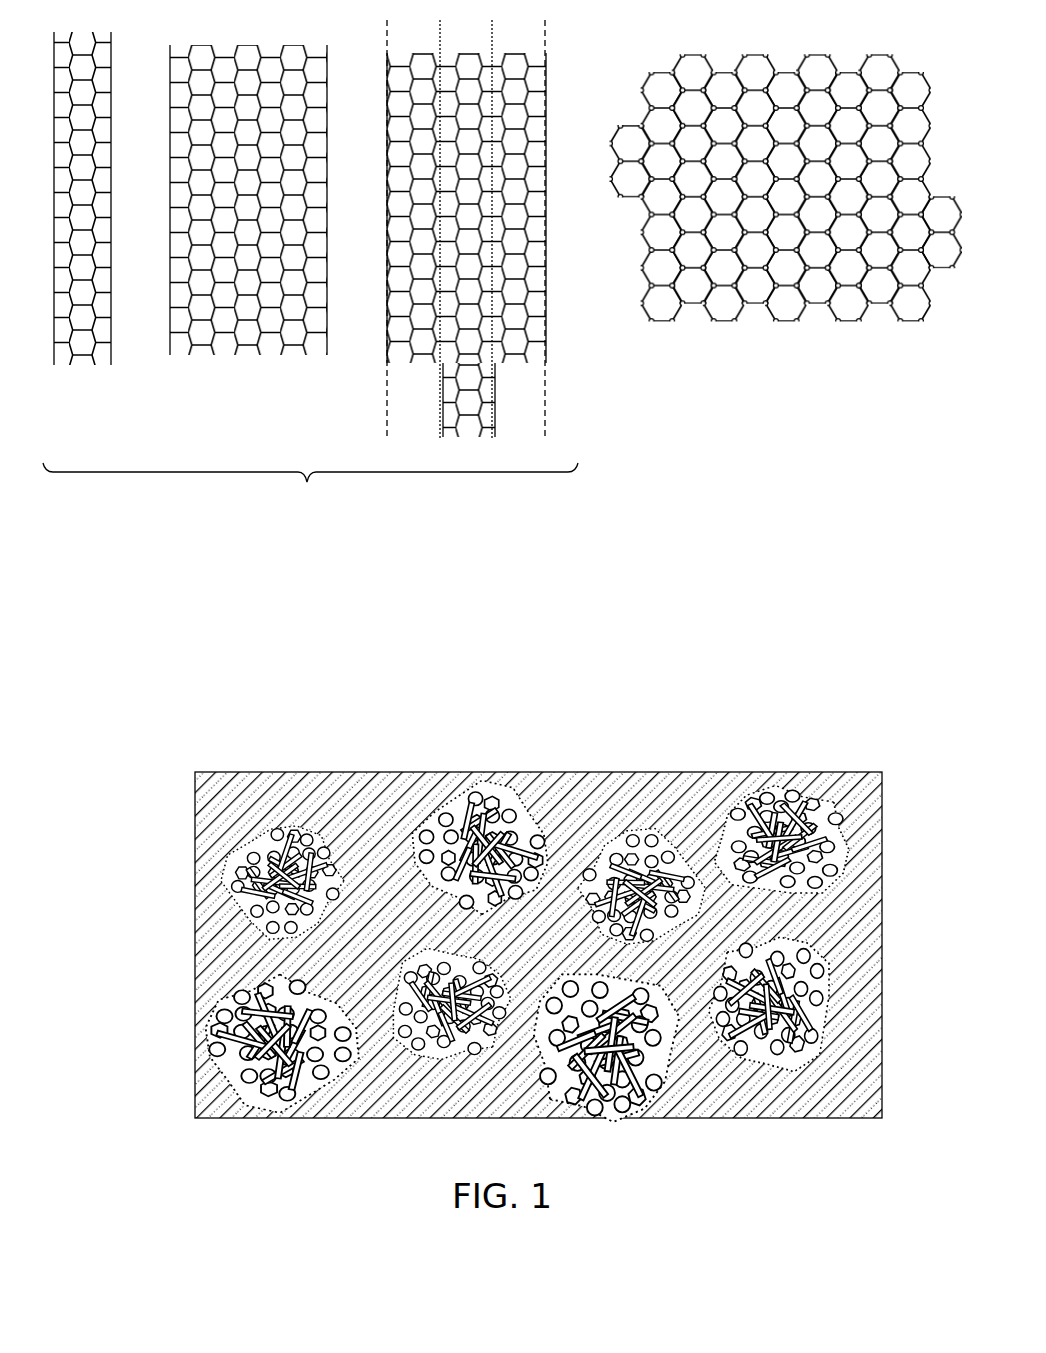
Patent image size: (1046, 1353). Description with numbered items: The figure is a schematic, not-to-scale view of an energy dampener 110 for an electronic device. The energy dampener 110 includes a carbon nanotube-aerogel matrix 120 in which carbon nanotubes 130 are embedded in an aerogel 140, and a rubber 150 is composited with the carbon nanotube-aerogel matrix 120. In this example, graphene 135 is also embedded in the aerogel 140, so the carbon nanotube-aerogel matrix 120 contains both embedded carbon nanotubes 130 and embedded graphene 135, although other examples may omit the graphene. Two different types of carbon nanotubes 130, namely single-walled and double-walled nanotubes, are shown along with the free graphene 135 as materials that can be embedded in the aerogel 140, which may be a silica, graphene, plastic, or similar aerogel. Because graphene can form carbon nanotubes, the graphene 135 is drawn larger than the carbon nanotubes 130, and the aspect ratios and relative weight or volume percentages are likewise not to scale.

The energy dampener 110 is at (472, 923).
The carbon nanotube-aerogel matrix 120 is at (403, 814).
The carbon nanotubes 130 is at (307, 510).
The graphene 135 is at (495, 775).
The aerogel 140 is at (507, 788).
The rubber 150 is at (855, 802).